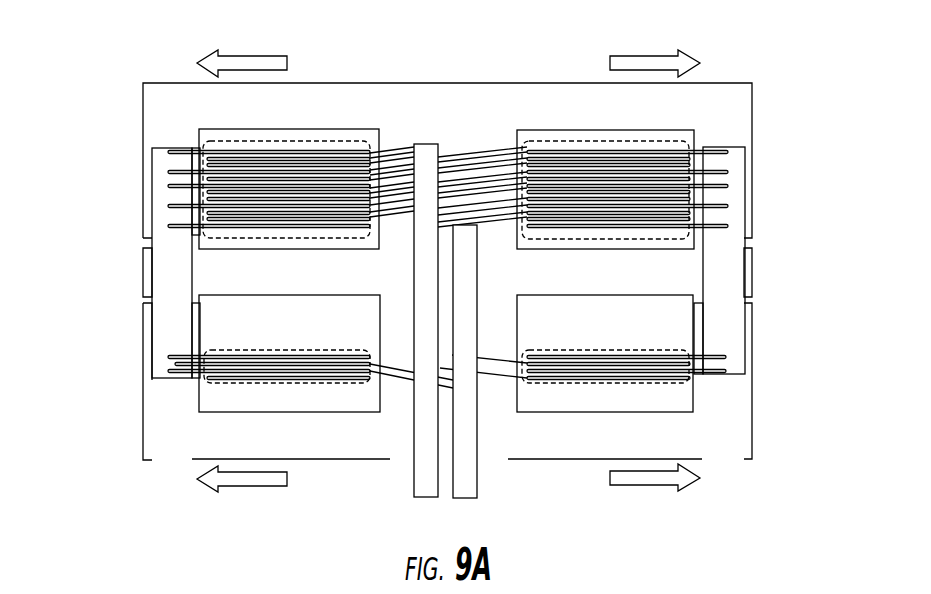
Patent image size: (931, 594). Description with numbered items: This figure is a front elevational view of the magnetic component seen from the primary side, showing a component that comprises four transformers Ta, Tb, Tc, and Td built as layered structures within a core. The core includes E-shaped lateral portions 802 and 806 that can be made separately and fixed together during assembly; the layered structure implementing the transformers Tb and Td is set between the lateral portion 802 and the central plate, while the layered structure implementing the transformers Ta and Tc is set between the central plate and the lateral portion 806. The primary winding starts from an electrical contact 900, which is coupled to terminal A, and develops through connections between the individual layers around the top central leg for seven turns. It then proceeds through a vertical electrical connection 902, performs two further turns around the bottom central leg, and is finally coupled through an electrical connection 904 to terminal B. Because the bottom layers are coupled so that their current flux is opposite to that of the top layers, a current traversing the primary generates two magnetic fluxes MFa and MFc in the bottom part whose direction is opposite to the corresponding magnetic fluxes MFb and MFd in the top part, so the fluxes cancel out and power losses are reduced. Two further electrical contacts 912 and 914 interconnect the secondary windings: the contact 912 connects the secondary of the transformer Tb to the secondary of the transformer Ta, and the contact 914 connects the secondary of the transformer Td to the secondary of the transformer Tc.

The lateral portion of the core 802 is at (156, 76).
The lateral portion of the core 806 is at (764, 410).
The electrical contact 900 is at (403, 479).
The vertical electrical connection 902 is at (479, 309).
The electrical connection 904 is at (493, 479).
The electrical contact 912 is at (134, 241).
The electrical contact 914 is at (760, 242).
The transformer Ta is at (295, 341).
The transformer Tb is at (341, 131).
The transformer Tc is at (635, 341).
The transformer Td is at (673, 131).
The magnetic flux MFa is at (242, 491).
The magnetic flux MFb is at (242, 51).
The magnetic flux MFc is at (655, 491).
The magnetic flux MFd is at (646, 51).